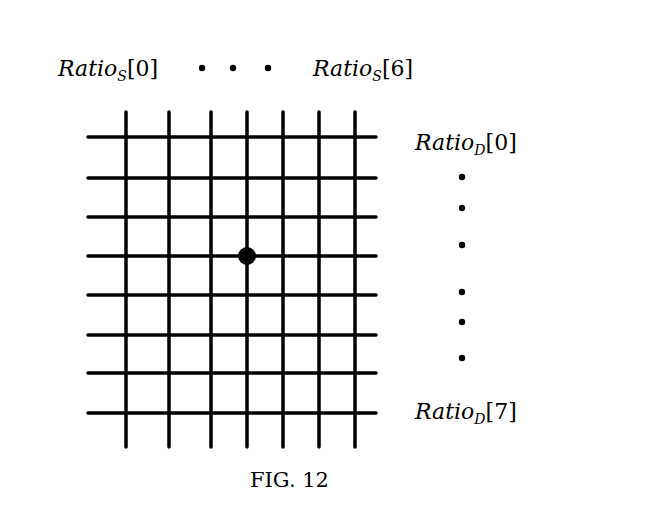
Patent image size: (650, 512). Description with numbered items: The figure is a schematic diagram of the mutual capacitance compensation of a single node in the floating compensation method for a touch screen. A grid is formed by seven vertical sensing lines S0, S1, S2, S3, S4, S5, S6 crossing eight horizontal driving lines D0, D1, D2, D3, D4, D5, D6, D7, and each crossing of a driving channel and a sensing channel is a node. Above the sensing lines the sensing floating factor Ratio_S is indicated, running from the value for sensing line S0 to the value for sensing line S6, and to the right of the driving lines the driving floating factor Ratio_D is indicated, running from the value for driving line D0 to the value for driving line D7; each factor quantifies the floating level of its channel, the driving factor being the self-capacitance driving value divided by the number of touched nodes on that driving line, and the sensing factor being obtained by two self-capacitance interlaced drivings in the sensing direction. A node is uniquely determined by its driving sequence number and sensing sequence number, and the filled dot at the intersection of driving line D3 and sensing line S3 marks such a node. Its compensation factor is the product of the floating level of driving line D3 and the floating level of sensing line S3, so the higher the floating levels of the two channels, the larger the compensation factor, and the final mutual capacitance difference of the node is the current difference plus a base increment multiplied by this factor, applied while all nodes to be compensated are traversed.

The sensing line S0 is at (126, 268).
The sensing line S1 is at (169, 268).
The sensing line S2 is at (211, 268).
The sensing line S3 is at (247, 268).
The sensing line S4 is at (283, 268).
The sensing line S5 is at (319, 268).
The sensing line S6 is at (355, 268).
The driving line D0 is at (245, 138).
The driving line D1 is at (245, 179).
The driving line D2 is at (245, 218).
The driving line D3 is at (245, 257).
The driving line D4 is at (245, 296).
The driving line D5 is at (245, 336).
The driving line D6 is at (245, 374).
The driving line D7 is at (245, 414).